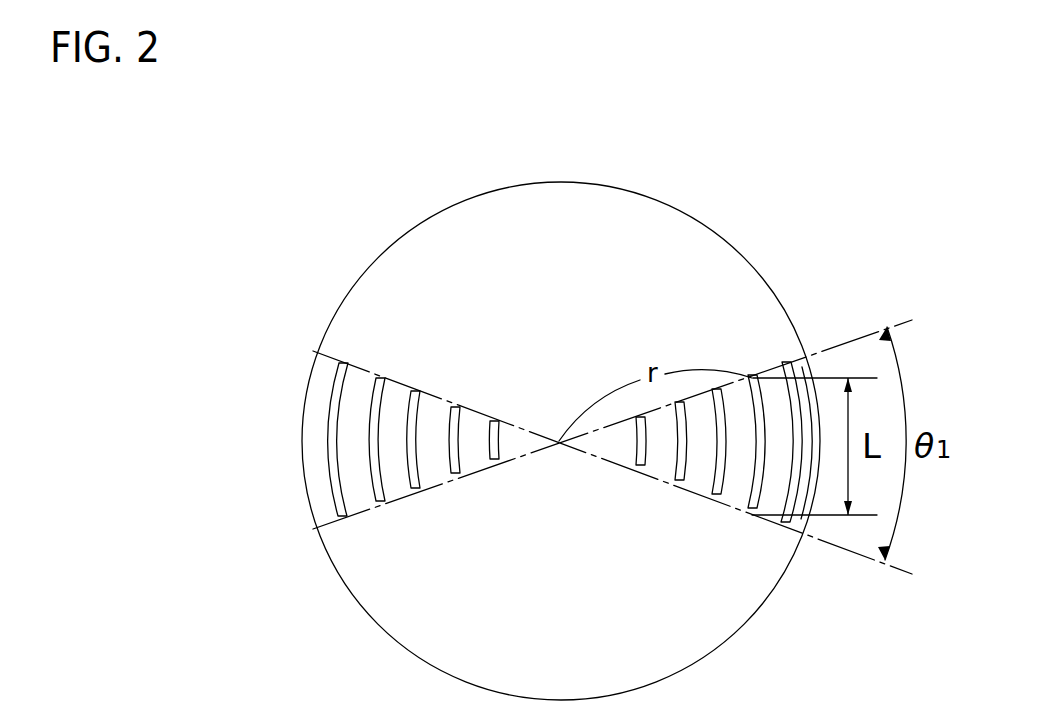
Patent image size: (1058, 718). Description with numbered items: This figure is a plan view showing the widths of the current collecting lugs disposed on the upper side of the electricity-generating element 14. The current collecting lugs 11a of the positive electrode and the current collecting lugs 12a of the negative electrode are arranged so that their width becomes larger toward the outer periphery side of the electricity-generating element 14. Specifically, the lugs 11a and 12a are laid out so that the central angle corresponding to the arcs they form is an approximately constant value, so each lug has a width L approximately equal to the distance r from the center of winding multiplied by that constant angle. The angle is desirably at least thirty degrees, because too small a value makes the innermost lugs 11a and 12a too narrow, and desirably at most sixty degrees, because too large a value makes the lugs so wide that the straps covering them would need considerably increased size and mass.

The electricity-generating element 14 is at (780, 223).
The current collecting lugs 12a is at (495, 427).
The current collecting lugs 11a is at (797, 507).